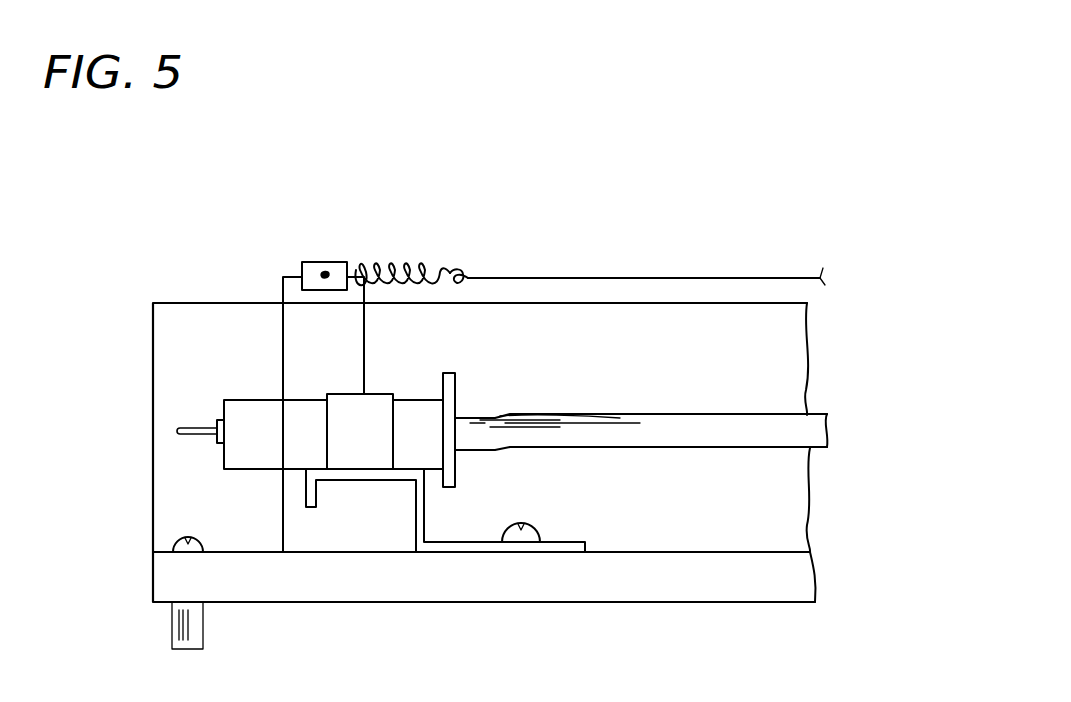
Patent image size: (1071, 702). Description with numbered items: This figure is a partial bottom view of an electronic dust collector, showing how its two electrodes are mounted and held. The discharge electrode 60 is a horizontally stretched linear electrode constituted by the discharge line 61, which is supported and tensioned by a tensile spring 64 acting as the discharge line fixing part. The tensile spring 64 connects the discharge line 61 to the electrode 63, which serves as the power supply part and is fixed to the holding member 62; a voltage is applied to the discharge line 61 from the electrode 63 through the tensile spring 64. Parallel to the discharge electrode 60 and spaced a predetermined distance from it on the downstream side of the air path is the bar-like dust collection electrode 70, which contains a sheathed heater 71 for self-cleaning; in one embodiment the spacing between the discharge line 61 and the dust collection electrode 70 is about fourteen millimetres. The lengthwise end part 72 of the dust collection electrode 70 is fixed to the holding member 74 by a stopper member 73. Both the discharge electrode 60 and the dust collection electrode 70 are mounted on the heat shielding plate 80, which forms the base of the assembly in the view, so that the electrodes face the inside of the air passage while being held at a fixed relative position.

The discharge electrode 60 is at (563, 264).
The discharge line 61 is at (660, 277).
The holding member 62 is at (283, 290).
The electrode 63 is at (310, 262).
The tensile spring 64 is at (392, 272).
The dust collection electrode 70 is at (620, 467).
The sheathed heater 71 is at (737, 442).
The lengthwise end part 72 is at (225, 466).
The stopper member 73 is at (378, 462).
The holding member 74 is at (465, 550).
The heat shielding plate 80 is at (671, 592).